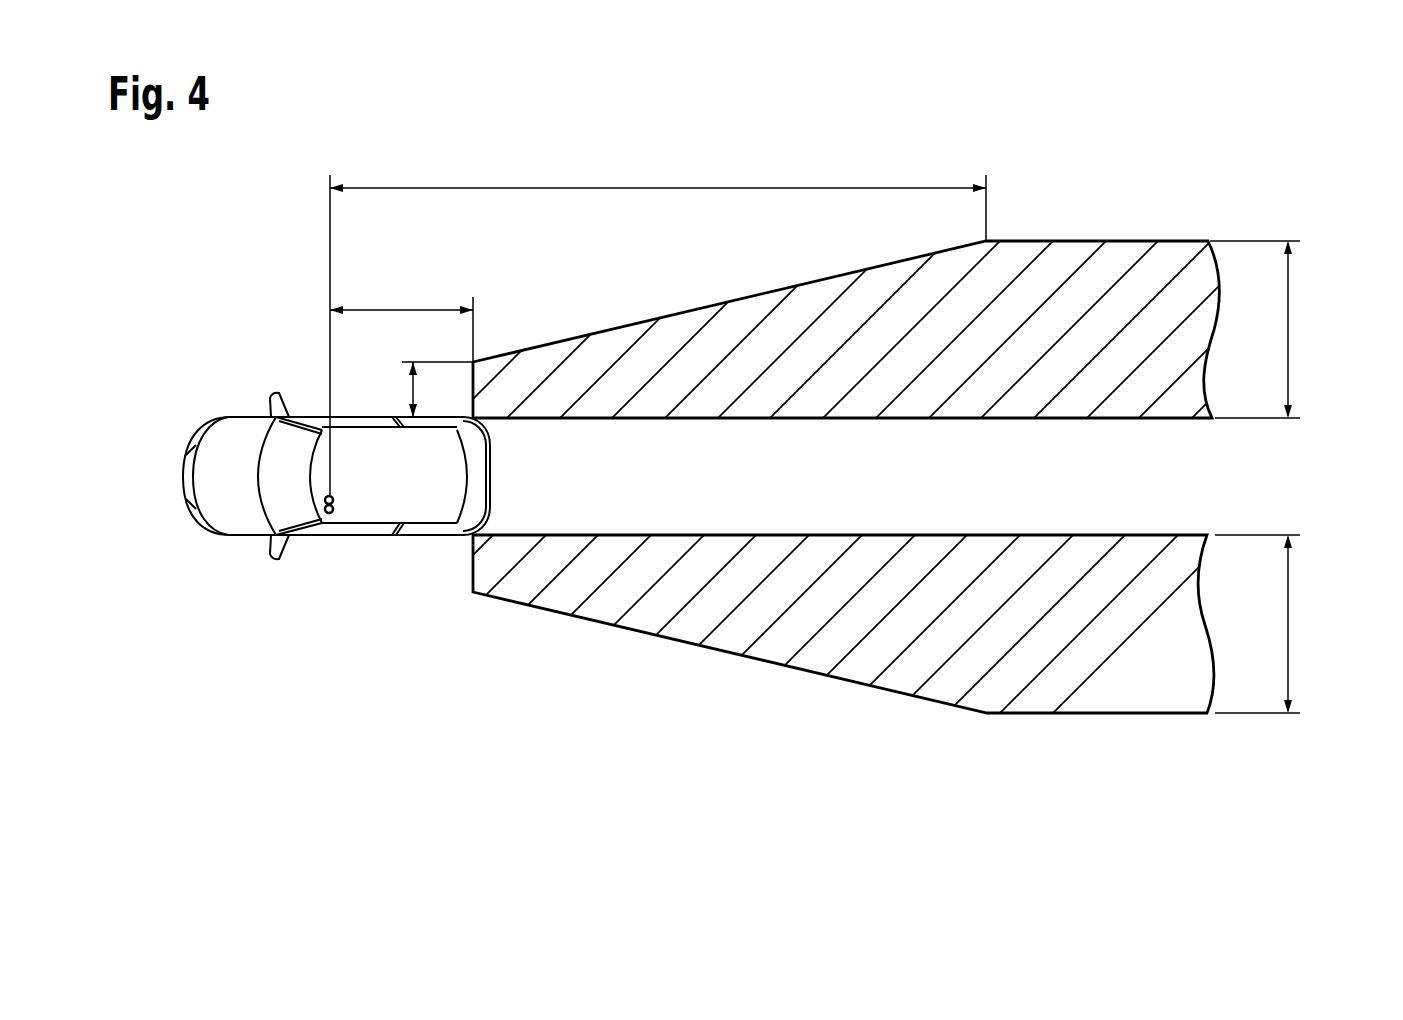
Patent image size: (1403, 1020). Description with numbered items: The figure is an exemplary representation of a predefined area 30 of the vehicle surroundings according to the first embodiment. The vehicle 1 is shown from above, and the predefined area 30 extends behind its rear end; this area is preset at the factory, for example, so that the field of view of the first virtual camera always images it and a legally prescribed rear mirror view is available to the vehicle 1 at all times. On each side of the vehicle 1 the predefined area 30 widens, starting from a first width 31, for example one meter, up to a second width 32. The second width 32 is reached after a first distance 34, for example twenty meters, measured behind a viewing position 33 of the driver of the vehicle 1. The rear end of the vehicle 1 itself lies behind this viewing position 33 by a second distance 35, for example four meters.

The vehicle 1 is at (186, 390).
The predefined area 30 is at (1127, 252).
The first width 31 is at (412, 392).
The second width 32 is at (1288, 328).
The viewing position 33 is at (331, 512).
The first distance 34 is at (658, 188).
The second distance 35 is at (403, 308).